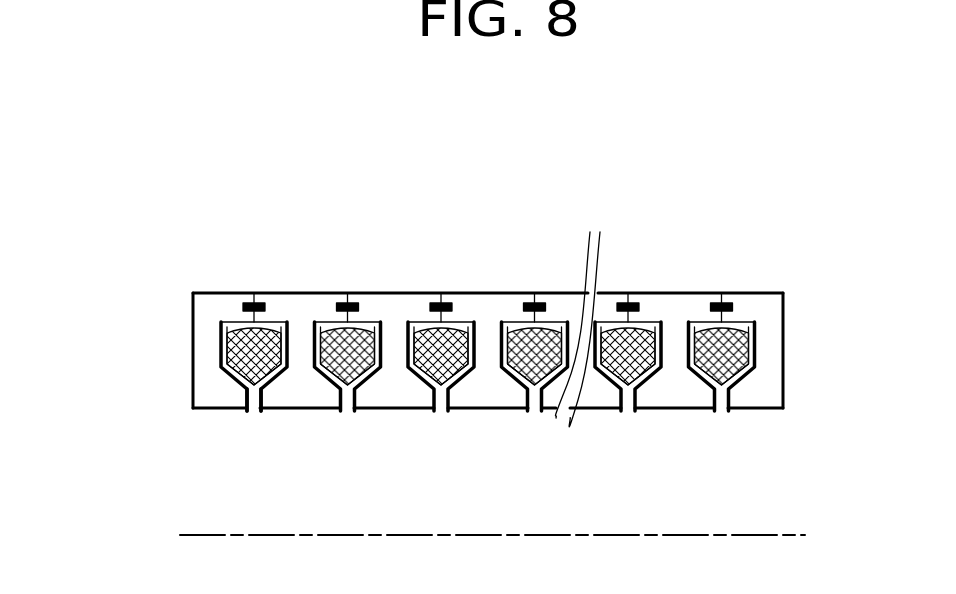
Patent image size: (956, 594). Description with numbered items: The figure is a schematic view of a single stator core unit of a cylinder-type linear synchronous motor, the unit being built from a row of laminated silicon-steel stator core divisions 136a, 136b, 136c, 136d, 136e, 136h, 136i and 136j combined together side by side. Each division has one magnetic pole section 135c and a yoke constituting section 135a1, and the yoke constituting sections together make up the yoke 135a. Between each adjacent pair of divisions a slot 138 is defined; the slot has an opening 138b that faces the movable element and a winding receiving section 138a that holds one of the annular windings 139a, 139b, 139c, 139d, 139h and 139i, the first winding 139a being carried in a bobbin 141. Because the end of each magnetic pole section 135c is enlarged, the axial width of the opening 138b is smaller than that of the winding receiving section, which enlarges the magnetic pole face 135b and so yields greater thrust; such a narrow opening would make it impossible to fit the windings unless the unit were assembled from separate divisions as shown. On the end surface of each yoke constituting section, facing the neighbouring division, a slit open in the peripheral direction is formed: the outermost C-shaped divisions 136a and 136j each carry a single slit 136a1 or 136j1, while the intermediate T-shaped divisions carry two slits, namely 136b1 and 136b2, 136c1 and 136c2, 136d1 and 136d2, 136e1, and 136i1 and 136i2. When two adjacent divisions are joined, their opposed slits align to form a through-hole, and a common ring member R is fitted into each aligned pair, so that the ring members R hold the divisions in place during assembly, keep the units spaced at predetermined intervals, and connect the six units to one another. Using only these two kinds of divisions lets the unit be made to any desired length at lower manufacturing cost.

The yoke 135a is at (507, 295).
The yoke constituting section 135a1 is at (212, 306).
The magnetic pole face 135b is at (209, 409).
The magnetic pole section 135c is at (203, 360).
The stator core division 136a is at (205, 320).
The slit 136a1 is at (242, 307).
The stator core division 136b is at (284, 303).
The slit 136b1 is at (264, 307).
The slit 136b2 is at (336, 307).
The stator core division 136c is at (378, 303).
The slit 136c1 is at (358, 307).
The slit 136c2 is at (430, 307).
The stator core division 136d is at (472, 303).
The slit 136d1 is at (453, 307).
The slit 136d2 is at (523, 307).
The stator core division 136e is at (568, 300).
The slit 136e1 is at (546, 307).
The stator core division 136h is at (617, 307).
The stator core division 136i is at (655, 300).
The slit 136i1 is at (639, 307).
The slit 136i2 is at (710, 307).
The stator core division 136j is at (752, 300).
The slit 136j1 is at (732, 307).
The slot 138 is at (434, 424).
The winding receiving section 138a is at (226, 328).
The opening 138b is at (253, 393).
The annular winding 139a is at (245, 342).
The annular winding 139b is at (335, 393).
The annular winding 139c is at (427, 383).
The annular winding 139d is at (520, 385).
The annular winding 139h is at (600, 393).
The annular winding 139i is at (712, 390).
The bobbin 141 is at (233, 378).
The ring member R is at (250, 303).